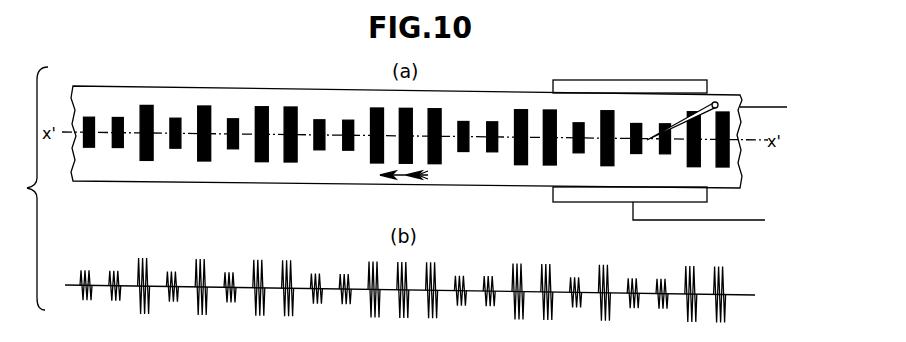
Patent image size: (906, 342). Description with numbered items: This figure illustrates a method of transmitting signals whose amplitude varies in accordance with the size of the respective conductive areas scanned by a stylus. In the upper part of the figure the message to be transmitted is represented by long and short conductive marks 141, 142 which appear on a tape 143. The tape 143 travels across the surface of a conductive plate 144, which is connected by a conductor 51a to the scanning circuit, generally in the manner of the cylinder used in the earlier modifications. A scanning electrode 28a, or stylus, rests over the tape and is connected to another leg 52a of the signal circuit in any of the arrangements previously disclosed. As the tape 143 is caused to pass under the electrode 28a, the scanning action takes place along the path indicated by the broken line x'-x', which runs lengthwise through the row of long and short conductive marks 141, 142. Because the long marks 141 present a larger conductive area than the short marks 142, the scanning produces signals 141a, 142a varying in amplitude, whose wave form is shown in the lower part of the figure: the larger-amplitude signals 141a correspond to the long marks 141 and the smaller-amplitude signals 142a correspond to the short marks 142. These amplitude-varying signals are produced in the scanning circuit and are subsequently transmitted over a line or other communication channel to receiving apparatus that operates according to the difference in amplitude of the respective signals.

The long conductive marks 141 is at (148, 106).
The short conductive marks 142 is at (175, 118).
The tape 143 is at (293, 98).
The conductive plate 144 is at (558, 80).
The scanning electrode 28a is at (678, 125).
The leg of the signal circuit 52a is at (749, 106).
The conductor 51a is at (687, 221).
The signals 141a is at (144, 260).
The signals 142a is at (177, 274).